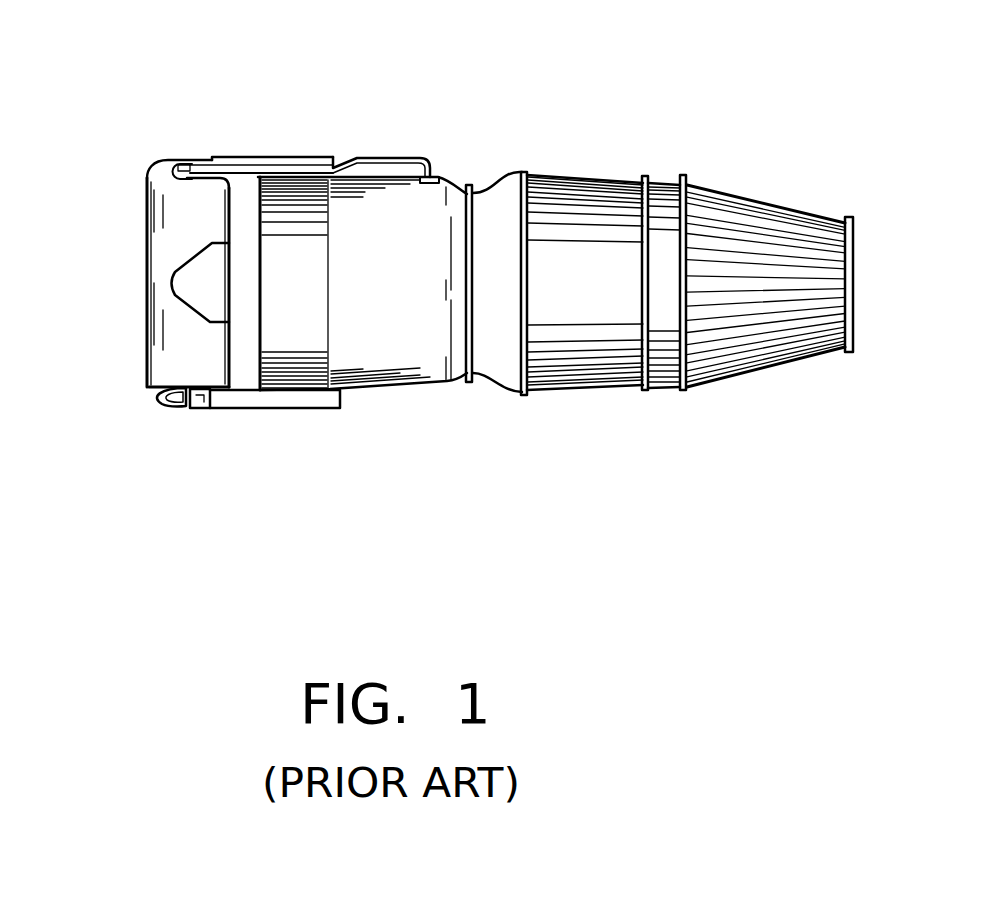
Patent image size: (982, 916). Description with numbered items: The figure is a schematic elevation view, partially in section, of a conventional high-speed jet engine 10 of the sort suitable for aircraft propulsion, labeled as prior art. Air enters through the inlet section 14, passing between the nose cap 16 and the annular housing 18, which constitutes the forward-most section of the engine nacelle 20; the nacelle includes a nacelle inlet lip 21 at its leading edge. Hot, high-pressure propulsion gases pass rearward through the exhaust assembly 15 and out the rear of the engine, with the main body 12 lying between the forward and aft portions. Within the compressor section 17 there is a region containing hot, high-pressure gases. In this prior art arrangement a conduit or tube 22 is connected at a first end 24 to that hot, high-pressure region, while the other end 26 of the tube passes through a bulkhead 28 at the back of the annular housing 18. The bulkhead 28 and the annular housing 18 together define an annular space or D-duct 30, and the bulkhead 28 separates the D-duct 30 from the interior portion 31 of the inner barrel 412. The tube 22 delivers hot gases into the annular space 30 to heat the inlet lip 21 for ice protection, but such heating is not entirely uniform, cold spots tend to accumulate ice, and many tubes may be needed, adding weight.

The high-speed jet engine 10 is at (516, 112).
The body housing 12 is at (583, 388).
The inlet section 14 is at (163, 248).
The exhaust assembly 15 is at (733, 375).
The nose cap 16 is at (222, 300).
The compressor section 17 is at (395, 387).
The annular housing 18 is at (153, 397).
The engine nacelle 20 is at (282, 157).
The nacelle inlet lip 21 is at (158, 200).
The conduit or tube 22 is at (393, 157).
The first end 24 is at (437, 177).
The other end 26 is at (174, 162).
The bulkhead 28 is at (200, 407).
The annular space or D-duct 30 is at (173, 393).
The interior portion 31 is at (217, 397).
The inner barrel 412 is at (202, 363).